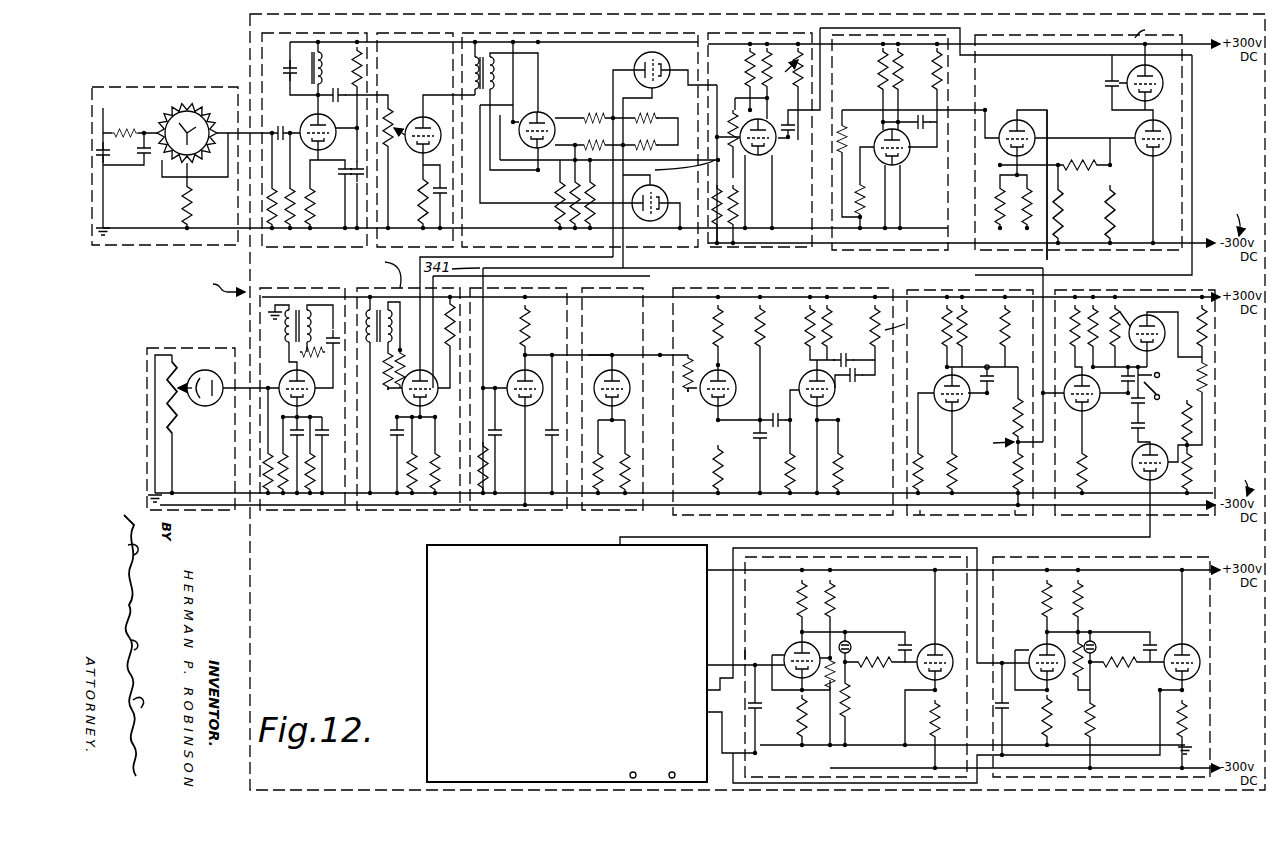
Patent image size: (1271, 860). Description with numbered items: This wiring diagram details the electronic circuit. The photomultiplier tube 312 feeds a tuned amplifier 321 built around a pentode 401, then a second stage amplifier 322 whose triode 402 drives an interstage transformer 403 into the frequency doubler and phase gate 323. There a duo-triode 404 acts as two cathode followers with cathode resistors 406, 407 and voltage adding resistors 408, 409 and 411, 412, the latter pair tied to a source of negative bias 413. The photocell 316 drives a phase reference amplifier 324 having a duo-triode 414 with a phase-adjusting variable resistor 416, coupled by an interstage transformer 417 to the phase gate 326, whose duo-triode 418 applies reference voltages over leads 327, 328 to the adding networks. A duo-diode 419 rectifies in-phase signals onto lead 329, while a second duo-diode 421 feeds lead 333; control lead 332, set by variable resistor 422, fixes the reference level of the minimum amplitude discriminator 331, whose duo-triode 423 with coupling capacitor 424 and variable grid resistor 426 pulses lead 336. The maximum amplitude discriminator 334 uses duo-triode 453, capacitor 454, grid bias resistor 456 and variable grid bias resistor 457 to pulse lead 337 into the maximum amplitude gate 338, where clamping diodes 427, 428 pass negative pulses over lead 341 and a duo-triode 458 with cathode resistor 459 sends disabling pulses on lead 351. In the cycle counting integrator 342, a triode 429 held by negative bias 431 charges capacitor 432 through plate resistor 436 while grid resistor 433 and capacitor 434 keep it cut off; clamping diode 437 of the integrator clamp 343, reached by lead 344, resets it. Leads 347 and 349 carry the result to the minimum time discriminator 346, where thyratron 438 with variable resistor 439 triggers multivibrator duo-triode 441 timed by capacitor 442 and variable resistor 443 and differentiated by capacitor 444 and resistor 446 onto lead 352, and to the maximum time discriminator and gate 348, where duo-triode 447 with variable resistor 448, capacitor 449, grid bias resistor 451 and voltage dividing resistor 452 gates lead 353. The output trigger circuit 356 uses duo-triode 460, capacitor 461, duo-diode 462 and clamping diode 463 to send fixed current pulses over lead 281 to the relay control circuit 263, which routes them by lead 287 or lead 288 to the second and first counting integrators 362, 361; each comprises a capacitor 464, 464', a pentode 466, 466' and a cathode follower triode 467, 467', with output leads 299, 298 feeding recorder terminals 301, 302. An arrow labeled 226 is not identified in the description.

The photomultiplier tube 312 is at (178, 87).
The tuned amplifier 321 is at (300, 38).
The second stage amplifier 322 is at (400, 38).
The frequency doubler and phase gate 323 is at (540, 38).
The minimum amplitude discriminator 331 is at (745, 38).
The second signal output lead 333 is at (838, 250).
The maximum amplitude discriminator 334 is at (955, 250).
The output lead 336 is at (968, 38).
The output lead 337 is at (975, 110).
The maximum amplitude gate 338 is at (1135, 38).
The first output lead 341 is at (1195, 135).
The output lead 351 is at (1047, 256).
The first signal output lead 329 is at (710, 76).
The control lead 332 is at (671, 170).
The pentode 401 is at (302, 120).
The triode 402 is at (412, 118).
The interstage transformer 403 is at (470, 62).
The duo-triode 404 is at (522, 120).
The cathode resistor 406 is at (575, 185).
The cathode resistor 407 is at (560, 180).
The voltage adding resistor 408 is at (590, 142).
The voltage adding resistor 409 is at (645, 142).
The voltage adding resistor 411 is at (595, 112).
The voltage adding resistor 412 is at (645, 114).
The source of negative bias 413 is at (1221, 218).
The duo-diode 419 is at (636, 60).
The second duo-diode 421 is at (648, 221).
The variable resistor 422 is at (590, 192).
The duo-triode 423 is at (760, 156).
The plate to grid coupling capacitor 424 is at (799, 128).
The variable grid resistor 426 is at (790, 55).
The clamping diode 427 is at (1163, 85).
The clamping diode 428 is at (1140, 132).
The duo-triode 453 is at (880, 139).
The plate-to-grid coupling capacitor 454 is at (920, 130).
The grid bias resistor 456 is at (937, 80).
The variable grid bias resistor 457 is at (855, 180).
The duo-triode 458 is at (1022, 121).
The cathode resistor 459 is at (1000, 212).
The control circuit 226 is at (214, 285).
The photocell 316 is at (190, 348).
The phase reference amplifier 324 is at (318, 288).
The phase gate 326 is at (395, 512).
The lead 327 is at (379, 270).
The lead 328 is at (557, 328).
The cycle counting integrator 342 is at (505, 512).
The integrator clamp 343 is at (620, 512).
The lead 344 is at (588, 355).
The minimum time discriminator 346 is at (785, 290).
The lead 347 is at (685, 355).
The maximum time discriminator and gate 348 is at (1015, 515).
The lead 349 is at (920, 515).
The output lead 352 is at (907, 292).
The output lead 353 is at (1045, 431).
The output trigger circuit 356 is at (1135, 292).
The duo-triode 414 is at (285, 379).
The variable resistor 416 is at (325, 362).
The interstage transformer 417 is at (385, 305).
The duo-triode 418 is at (402, 399).
The triode 429 is at (513, 380).
The negative bias 431 is at (1231, 481).
The charging capacitor 432 is at (500, 430).
The grid resistor 433 is at (490, 468).
The capacitor 434 is at (548, 432).
The plate resistor 436 is at (528, 335).
The clamping diode 437 is at (628, 382).
The trigger thyratron 438 is at (712, 372).
The variable bias adjusting resistor 439 is at (714, 463).
The duo-triode 441 is at (800, 382).
The plate-to-grid coupling capacitor 442 is at (840, 418).
The variable grid bias resistor 443 is at (870, 328).
The capacitor 444 is at (856, 382).
The resistor 446 is at (887, 332).
The duo-triode 447 is at (938, 383).
The variable resistor 448 is at (948, 478).
The plate-to-grid coupling capacitor 449 is at (998, 383).
The grid bias resistor 451 is at (1002, 330).
The voltage dividing resistor 452 is at (986, 441).
The duo-triode 460 is at (1068, 381).
The capacitor 461 is at (1140, 397).
The duo-diode 462 is at (1134, 470).
The clamping diode 463 is at (1165, 346).
The relay control circuit 263 is at (427, 600).
The signal lead 281 is at (1152, 534).
The lead 287 is at (707, 691).
The lead 288 is at (745, 658).
The output lead 298 is at (707, 713).
The output lead 299 is at (707, 665).
The terminal 301 is at (630, 773).
The terminal 302 is at (671, 772).
The first direct current amplifier counting integrator 361 is at (925, 566).
The second direct current amplifier counting integrator 362 is at (1135, 560).
The capacitor 464 is at (1058, 717).
The capacitor 464' is at (781, 722).
The pentode 466 is at (1032, 654).
The pentode 466' is at (783, 658).
The triode 467 is at (1163, 644).
The triode 467' is at (921, 643).